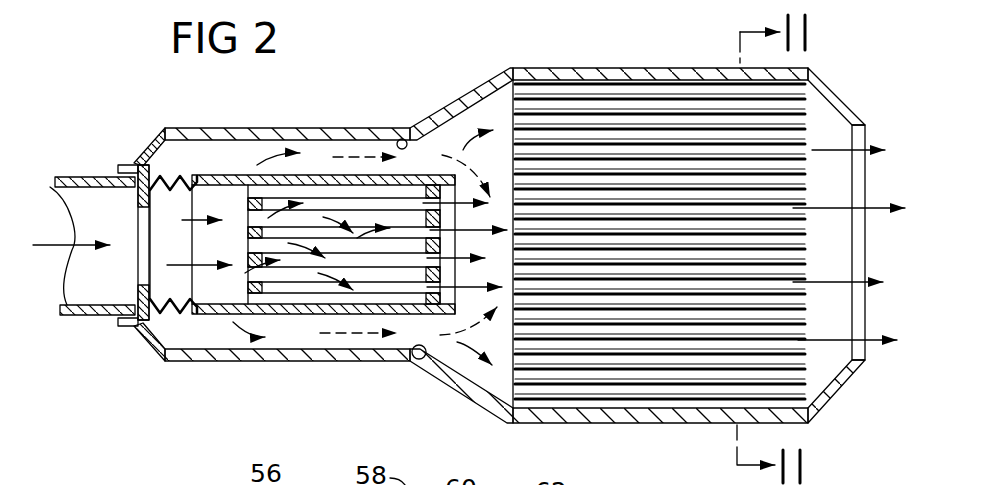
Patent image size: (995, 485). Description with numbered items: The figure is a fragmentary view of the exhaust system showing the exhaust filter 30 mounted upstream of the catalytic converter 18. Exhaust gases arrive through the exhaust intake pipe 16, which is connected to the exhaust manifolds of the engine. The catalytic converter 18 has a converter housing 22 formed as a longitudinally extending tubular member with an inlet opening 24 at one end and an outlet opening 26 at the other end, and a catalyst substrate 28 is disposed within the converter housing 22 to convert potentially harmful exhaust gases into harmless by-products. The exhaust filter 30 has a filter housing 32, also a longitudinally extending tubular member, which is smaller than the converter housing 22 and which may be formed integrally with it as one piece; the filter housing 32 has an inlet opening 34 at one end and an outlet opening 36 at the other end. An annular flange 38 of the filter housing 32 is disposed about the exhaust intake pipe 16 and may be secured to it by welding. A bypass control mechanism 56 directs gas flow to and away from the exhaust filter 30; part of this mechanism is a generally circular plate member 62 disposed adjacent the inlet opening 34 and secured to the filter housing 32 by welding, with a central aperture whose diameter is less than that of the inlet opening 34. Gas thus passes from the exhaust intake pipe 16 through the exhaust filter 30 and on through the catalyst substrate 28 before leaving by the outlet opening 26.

The exhaust intake pipe 16 is at (84, 314).
The catalytic converter 18 is at (545, 68).
The converter housing 22 is at (603, 424).
The inlet opening 24 is at (428, 363).
The outlet opening 26 is at (858, 362).
The catalyst substrate 28 is at (650, 96).
The exhaust filter 30 is at (316, 168).
The filter housing 32 is at (262, 130).
The inlet opening 34 is at (112, 188).
The outlet opening 36 is at (408, 140).
The annular flange 38 is at (124, 172).
The bypass control mechanism 56 is at (170, 363).
The plate member 62 is at (136, 324).